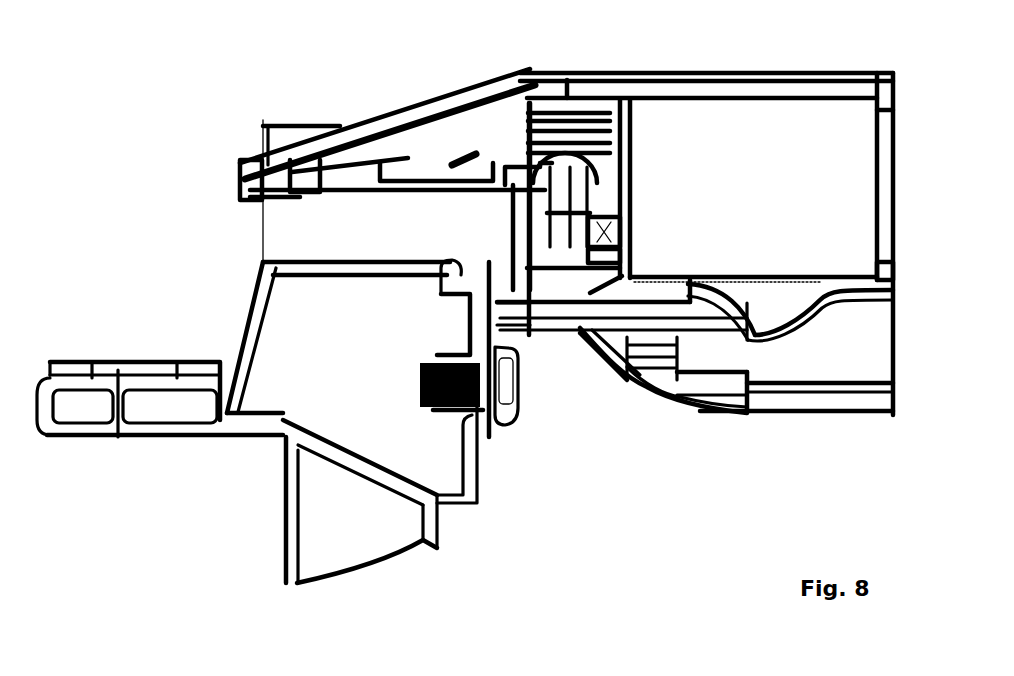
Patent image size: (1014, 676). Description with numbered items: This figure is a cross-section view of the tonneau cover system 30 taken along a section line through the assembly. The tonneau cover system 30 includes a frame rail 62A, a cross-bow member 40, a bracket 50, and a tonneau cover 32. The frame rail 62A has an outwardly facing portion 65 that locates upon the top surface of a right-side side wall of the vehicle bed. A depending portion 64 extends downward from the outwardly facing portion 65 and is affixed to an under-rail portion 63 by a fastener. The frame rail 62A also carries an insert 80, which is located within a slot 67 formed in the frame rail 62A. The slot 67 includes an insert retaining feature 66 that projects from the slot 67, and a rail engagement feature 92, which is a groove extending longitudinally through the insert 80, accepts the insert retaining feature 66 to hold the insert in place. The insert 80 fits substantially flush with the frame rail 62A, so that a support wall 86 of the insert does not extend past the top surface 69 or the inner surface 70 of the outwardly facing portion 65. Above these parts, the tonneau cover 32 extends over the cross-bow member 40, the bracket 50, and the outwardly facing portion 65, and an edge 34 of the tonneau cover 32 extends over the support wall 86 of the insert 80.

The tonneau cover system 30 is at (232, 93).
The tonneau cover 32 is at (805, 68).
The edge 34 is at (407, 119).
The cross-bow member 40 is at (886, 193).
The bracket 50 is at (661, 118).
The frame rail 62A is at (203, 212).
The under-rail portion 63 is at (243, 334).
The depending portion 64 is at (497, 232).
The outwardly facing portion 65 is at (476, 198).
The insert retaining feature 66 is at (443, 186).
The slot 67 is at (405, 150).
The top surface 69 is at (460, 87).
The inner surface 70 is at (560, 175).
The insert 80 is at (516, 118).
The support wall 86 is at (504, 128).
The rail engagement feature 92 is at (462, 188).